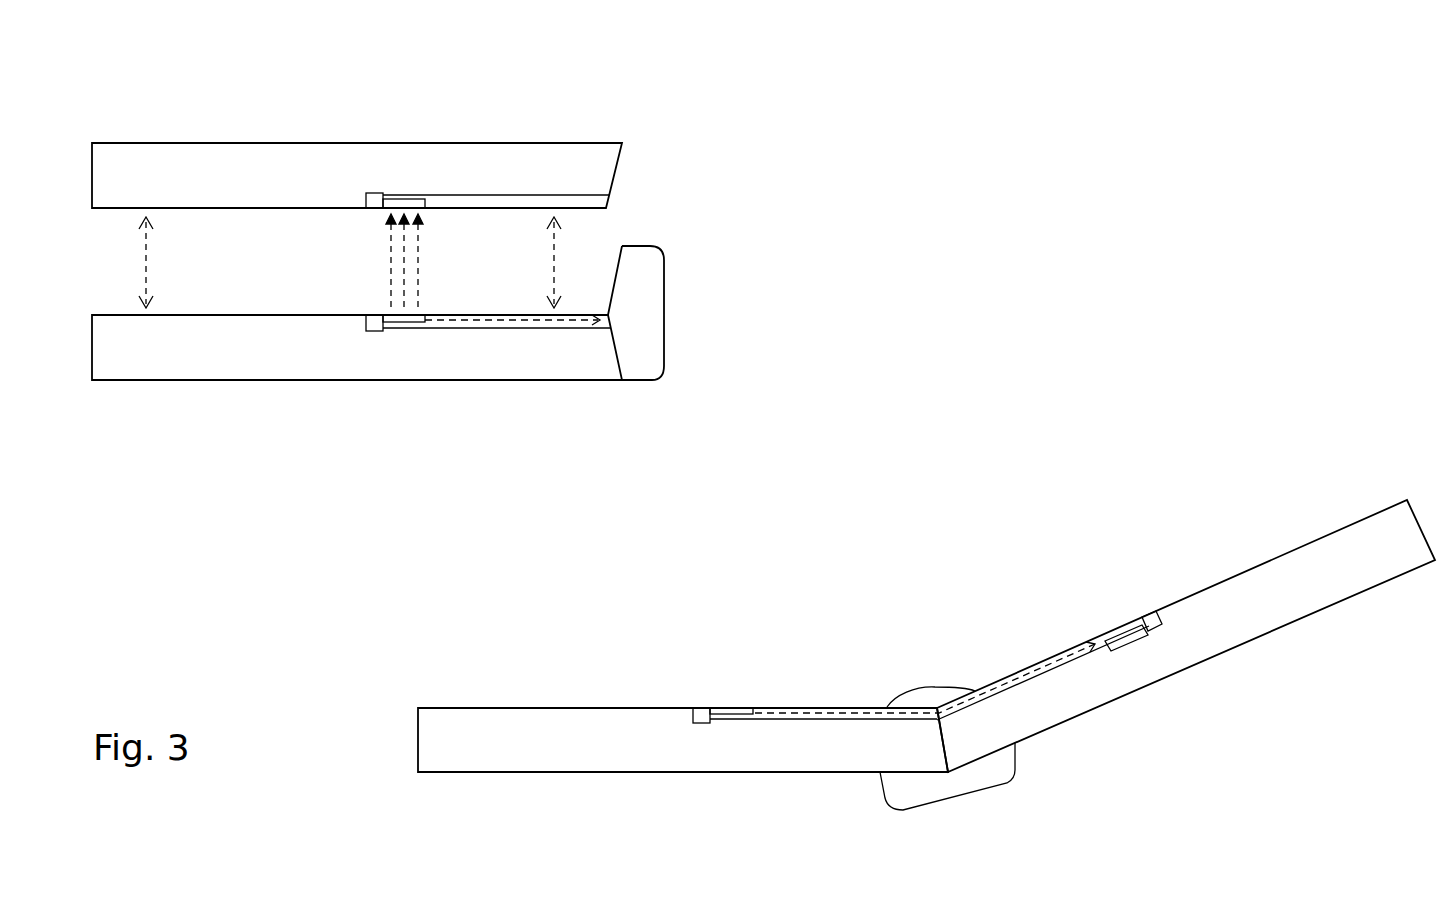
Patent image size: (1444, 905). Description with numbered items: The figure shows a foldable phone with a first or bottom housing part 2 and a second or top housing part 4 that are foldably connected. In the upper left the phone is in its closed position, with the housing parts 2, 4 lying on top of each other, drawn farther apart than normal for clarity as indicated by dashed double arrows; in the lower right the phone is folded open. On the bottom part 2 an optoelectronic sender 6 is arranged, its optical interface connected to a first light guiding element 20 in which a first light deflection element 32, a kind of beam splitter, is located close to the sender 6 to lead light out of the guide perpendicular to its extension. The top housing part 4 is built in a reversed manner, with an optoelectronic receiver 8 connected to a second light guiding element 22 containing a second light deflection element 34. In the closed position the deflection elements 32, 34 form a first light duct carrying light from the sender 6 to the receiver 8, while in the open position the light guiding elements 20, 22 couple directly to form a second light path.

The first or bottom housing part 2 is at (247, 368).
The second or top housing part 4 is at (597, 172).
The optoelectronic sender 6 is at (375, 331).
The optoelectronic receiver 8 is at (378, 193).
The first light guiding element 20 is at (478, 325).
The second light guiding element 22 is at (505, 202).
The first light deflection element 32 is at (402, 320).
The second light deflection element 34 is at (398, 203).